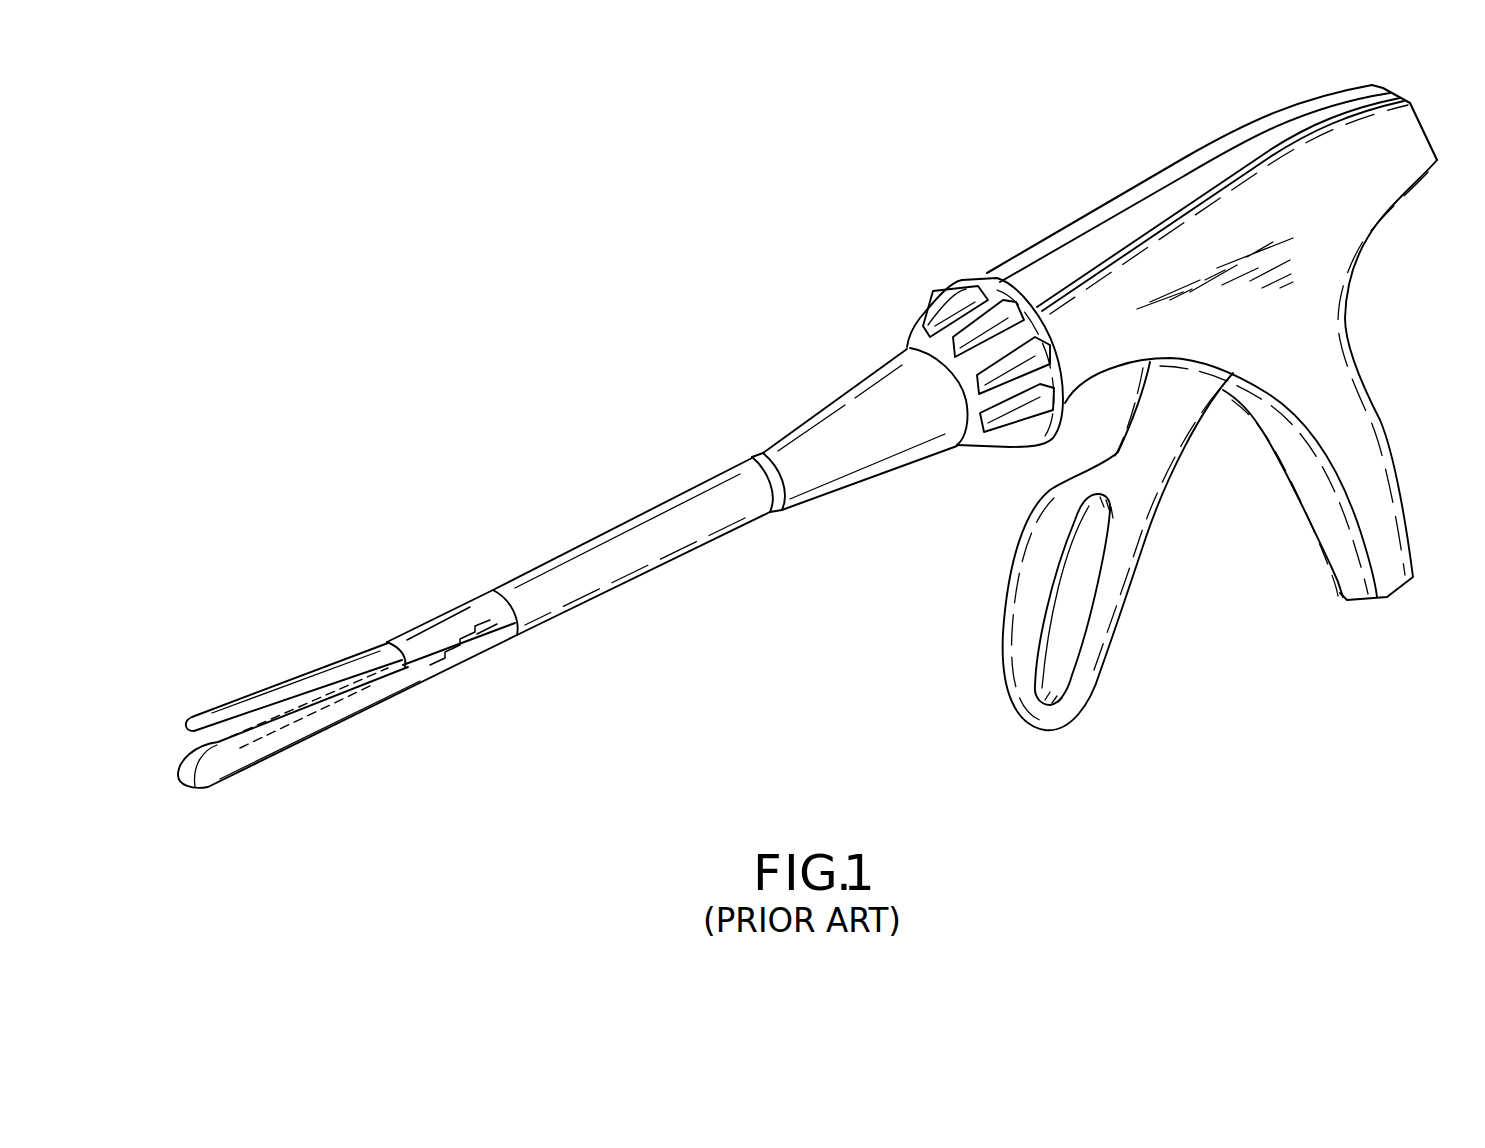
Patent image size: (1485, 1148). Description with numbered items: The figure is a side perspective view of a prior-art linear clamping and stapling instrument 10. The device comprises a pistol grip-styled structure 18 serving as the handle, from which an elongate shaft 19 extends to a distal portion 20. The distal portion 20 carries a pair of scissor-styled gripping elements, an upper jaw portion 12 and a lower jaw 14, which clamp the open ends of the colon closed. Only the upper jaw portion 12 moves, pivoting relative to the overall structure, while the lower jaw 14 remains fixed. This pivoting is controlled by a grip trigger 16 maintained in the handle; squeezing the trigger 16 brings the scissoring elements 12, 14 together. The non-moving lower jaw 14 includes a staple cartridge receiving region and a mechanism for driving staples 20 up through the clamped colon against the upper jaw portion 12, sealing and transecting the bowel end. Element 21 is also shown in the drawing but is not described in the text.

The linear stapling instrument 10 is at (900, 251).
The upper jaw portion 12 is at (298, 675).
The lower jaw 14 is at (357, 705).
The grip trigger 16 is at (1152, 598).
The pistol grip-styled structure 18 is at (1255, 203).
The elongate shaft 19 is at (640, 562).
The distal portion 20 is at (260, 735).
The inner tube 21 is at (436, 706).